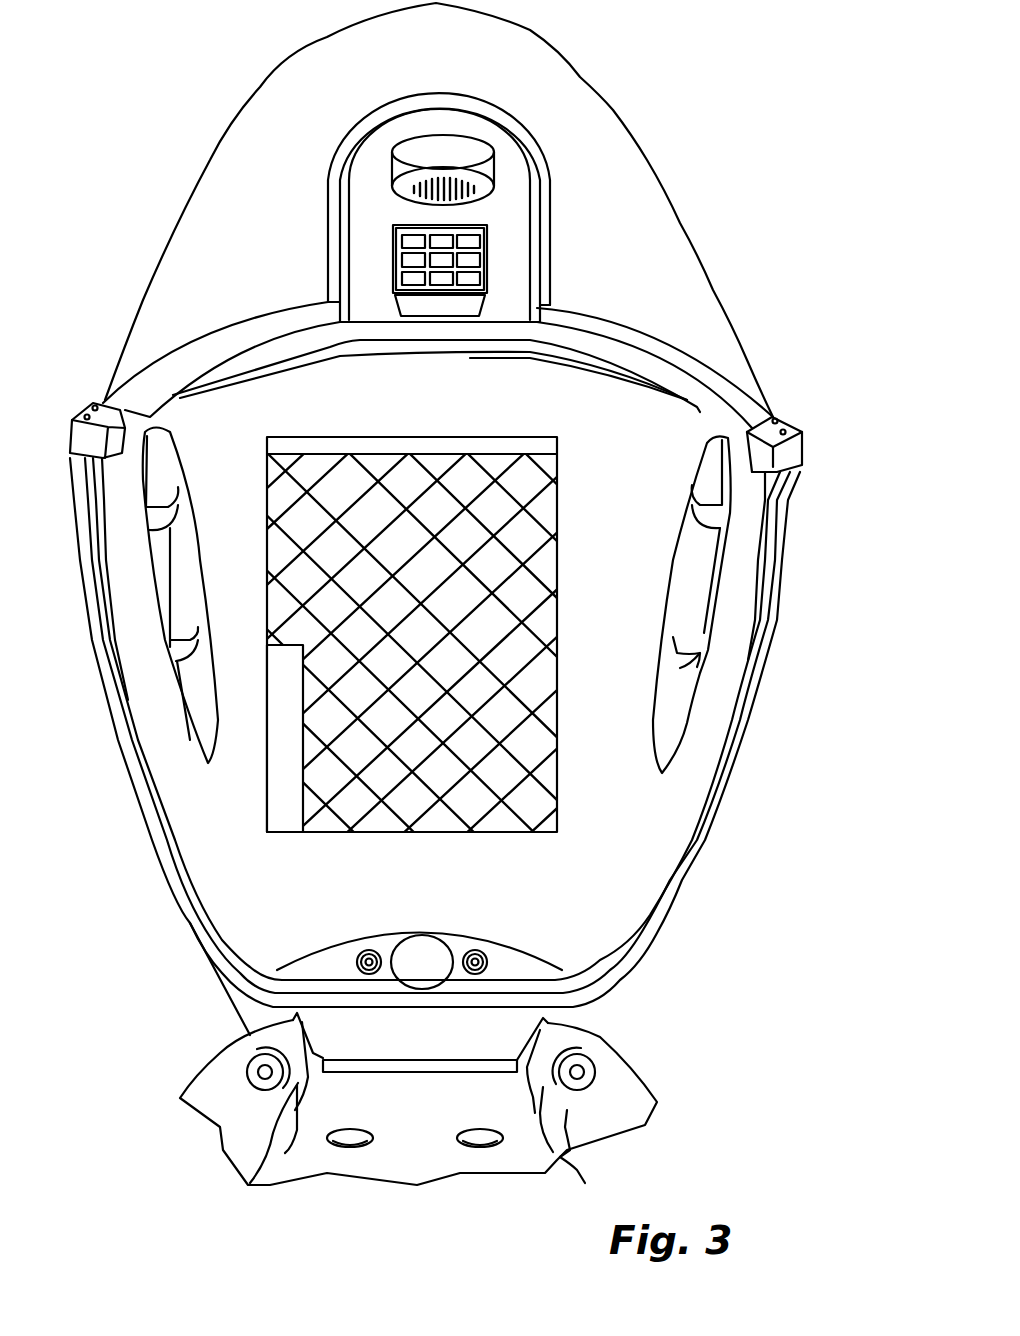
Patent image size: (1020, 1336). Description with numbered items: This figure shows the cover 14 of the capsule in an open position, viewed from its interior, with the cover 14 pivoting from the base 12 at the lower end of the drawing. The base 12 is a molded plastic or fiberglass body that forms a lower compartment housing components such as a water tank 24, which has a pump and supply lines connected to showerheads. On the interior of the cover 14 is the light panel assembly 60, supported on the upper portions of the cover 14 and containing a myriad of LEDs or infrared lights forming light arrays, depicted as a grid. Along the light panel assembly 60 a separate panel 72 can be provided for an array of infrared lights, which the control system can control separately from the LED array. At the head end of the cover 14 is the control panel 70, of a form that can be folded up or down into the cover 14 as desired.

The base 12 is at (222, 1138).
The cover 14 is at (130, 735).
The water tank 24 is at (252, 1060).
The light panel assembly 60 is at (555, 500).
The control panel 70 is at (512, 217).
The panel for an array of infrared lights 72 is at (287, 788).